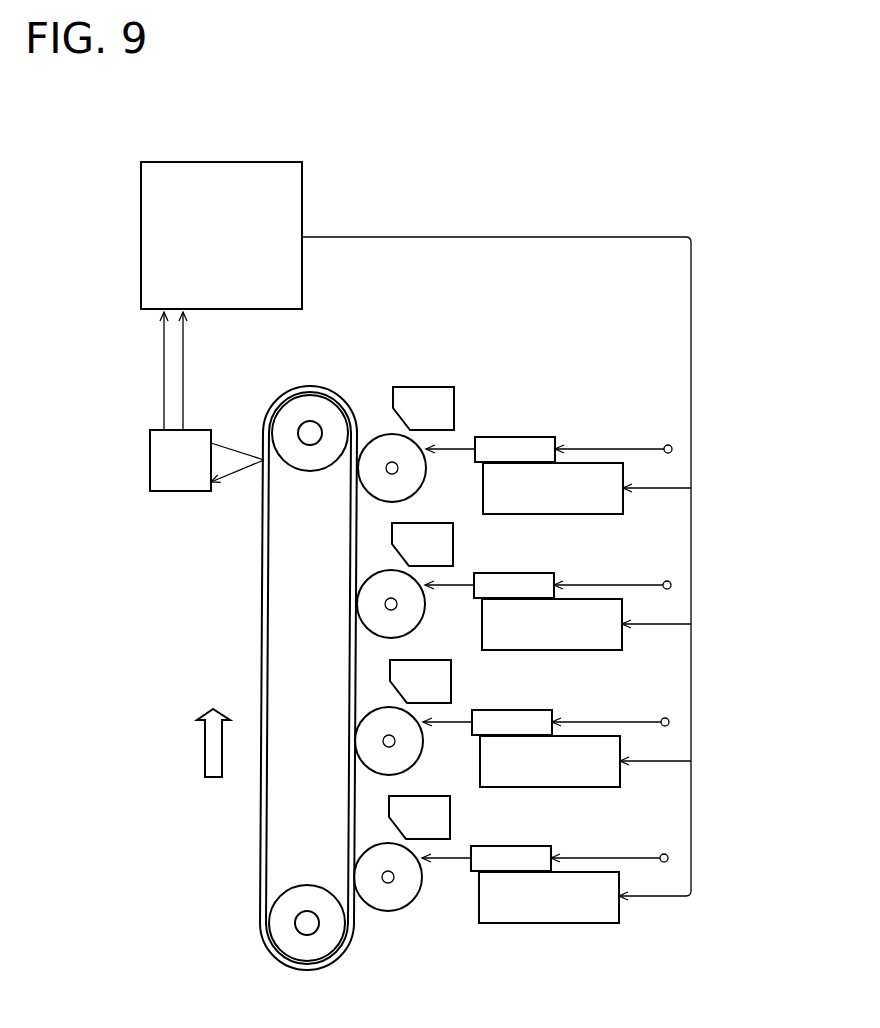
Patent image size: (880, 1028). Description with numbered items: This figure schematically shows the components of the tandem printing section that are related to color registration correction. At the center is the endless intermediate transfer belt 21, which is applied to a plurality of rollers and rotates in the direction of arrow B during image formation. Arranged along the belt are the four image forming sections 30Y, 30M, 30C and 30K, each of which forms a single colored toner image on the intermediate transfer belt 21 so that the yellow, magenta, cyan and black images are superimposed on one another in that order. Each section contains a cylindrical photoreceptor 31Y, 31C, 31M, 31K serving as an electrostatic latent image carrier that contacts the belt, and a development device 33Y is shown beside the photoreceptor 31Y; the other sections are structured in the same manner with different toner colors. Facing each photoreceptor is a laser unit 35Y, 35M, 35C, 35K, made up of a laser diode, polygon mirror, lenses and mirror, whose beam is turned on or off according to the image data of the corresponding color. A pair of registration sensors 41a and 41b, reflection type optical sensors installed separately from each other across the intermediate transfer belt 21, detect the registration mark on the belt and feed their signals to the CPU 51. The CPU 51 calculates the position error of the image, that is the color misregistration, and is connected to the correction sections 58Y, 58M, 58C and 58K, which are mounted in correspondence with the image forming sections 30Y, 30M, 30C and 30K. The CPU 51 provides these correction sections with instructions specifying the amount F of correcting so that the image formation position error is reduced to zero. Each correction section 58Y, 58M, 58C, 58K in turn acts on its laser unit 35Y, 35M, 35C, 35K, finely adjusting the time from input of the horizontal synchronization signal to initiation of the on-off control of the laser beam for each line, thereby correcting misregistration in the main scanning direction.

The CPU 51 is at (197, 162).
The amount of correcting F is at (691, 356).
The registration sensor 41a is at (202, 487).
The registration sensor 41b is at (176, 492).
The intermediate transfer belt 21 is at (262, 620).
The arrow B is at (205, 751).
The image forming section 30Y is at (524, 436).
The image forming section 30M is at (524, 589).
The image forming section 30C is at (523, 726).
The image forming section 30K is at (517, 862).
The photoreceptor 31Y is at (425, 483).
The photoreceptor 31C is at (424, 619).
The photoreceptor 31M is at (422, 756).
The photoreceptor 31K is at (421, 892).
The development device 33Y is at (424, 387).
The laser unit 35Y is at (500, 437).
The laser unit 35M is at (499, 573).
The laser unit 35C is at (497, 710).
The laser unit 35K is at (496, 846).
The correction section 58Y is at (623, 505).
The correction section 58M is at (622, 641).
The correction section 58C is at (620, 778).
The correction section 58K is at (619, 914).